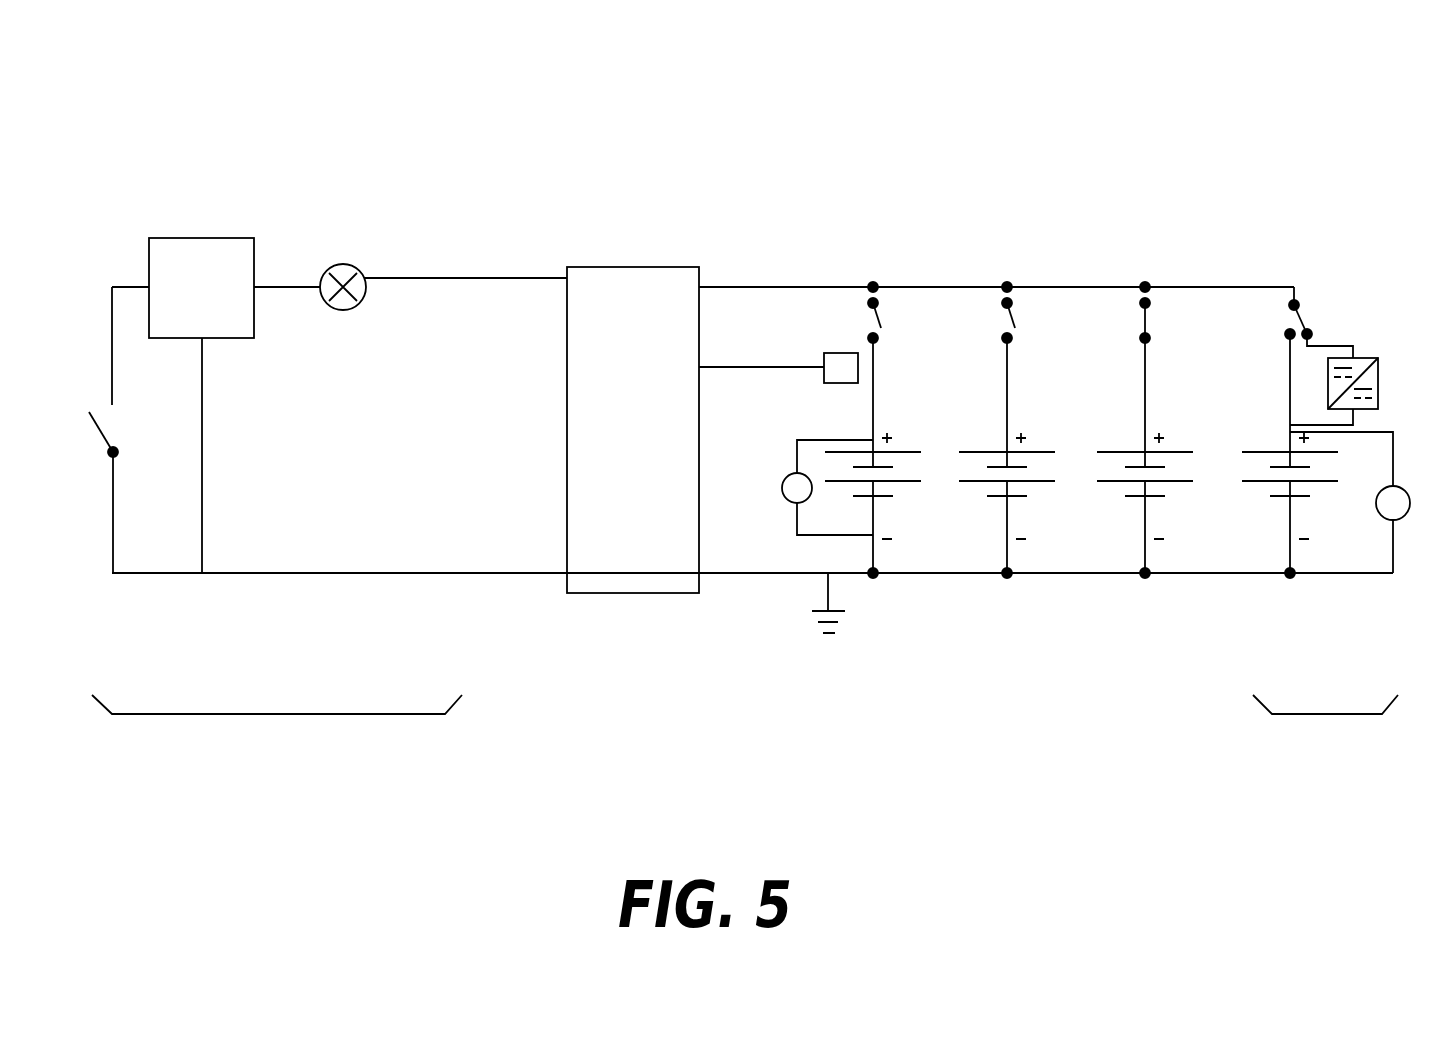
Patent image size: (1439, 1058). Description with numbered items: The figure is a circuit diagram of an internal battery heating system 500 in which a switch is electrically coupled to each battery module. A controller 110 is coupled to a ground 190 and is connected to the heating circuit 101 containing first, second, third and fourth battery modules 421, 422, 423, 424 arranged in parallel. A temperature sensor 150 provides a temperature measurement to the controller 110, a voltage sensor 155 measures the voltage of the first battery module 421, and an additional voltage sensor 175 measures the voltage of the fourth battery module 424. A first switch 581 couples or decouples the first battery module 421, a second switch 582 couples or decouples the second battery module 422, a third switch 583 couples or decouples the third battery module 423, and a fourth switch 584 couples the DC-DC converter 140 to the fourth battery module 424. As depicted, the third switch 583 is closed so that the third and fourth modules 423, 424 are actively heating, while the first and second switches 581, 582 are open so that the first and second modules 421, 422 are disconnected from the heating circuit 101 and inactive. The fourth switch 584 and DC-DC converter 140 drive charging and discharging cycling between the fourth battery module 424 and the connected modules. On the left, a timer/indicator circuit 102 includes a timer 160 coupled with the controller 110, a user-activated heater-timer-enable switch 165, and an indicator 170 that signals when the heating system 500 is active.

The internal battery heating system 500 is at (263, 104).
The heating circuit 101 is at (1330, 714).
The timer/indicator circuit 102 is at (258, 714).
The controller 110 is at (648, 440).
The DC-DC converter 140 is at (1363, 358).
The temperature sensor 150 is at (824, 353).
The voltage sensor 155 is at (785, 481).
The timer 160 is at (217, 300).
The heater-timer-enable switch 165 is at (100, 468).
The indicator 170 is at (344, 264).
The additional voltage sensor 175 is at (1400, 518).
The ground 190 is at (800, 628).
The first battery module 421 is at (928, 490).
The second battery module 422 is at (1068, 490).
The third battery module 423 is at (1210, 490).
The fourth battery module 424 is at (1350, 490).
The first switch 581 is at (900, 319).
The second switch 582 is at (1034, 319).
The third switch 583 is at (1163, 319).
The fourth switch 584 is at (1268, 337).